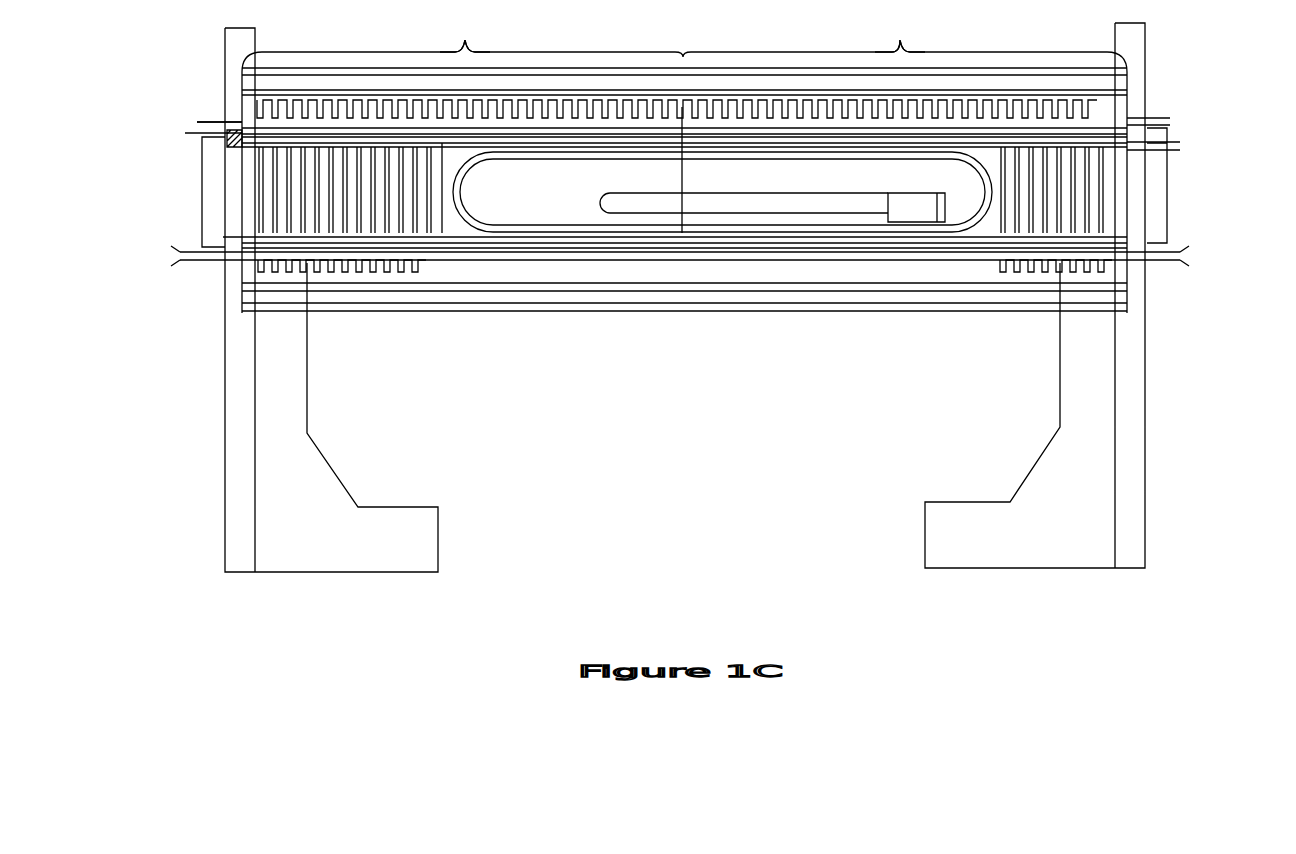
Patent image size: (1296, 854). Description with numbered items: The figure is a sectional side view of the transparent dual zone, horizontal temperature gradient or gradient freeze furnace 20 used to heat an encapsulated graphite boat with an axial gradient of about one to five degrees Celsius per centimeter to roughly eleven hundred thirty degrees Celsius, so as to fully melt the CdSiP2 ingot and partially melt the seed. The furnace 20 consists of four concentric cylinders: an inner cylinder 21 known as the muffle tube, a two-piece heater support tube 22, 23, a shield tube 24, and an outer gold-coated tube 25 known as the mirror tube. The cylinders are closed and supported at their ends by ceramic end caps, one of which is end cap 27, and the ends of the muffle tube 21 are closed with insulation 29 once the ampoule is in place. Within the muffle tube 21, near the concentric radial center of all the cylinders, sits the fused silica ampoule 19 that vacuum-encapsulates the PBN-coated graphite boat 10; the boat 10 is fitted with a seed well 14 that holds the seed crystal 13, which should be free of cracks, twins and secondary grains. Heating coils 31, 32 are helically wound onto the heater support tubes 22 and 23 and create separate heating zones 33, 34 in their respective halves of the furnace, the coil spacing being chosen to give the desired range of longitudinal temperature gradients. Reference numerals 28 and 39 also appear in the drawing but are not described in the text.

The PBN-coated graphite boat 10 is at (596, 201).
The seed crystal 13 is at (912, 189).
The seed well 14 is at (904, 215).
The fused silica ampoule 19 is at (455, 236).
The furnace 20 is at (773, 319).
The inner cylinder (muffle tube) 21 is at (224, 147).
The heater support tube 22 is at (195, 132).
The heater support tube 23 is at (768, 128).
The shield tube 24 is at (1135, 91).
The outer gold-coated tube (mirror tube) 25 is at (1135, 72).
The ceramic end cap 27 is at (1148, 413).
The left pillar 28 is at (222, 405).
The insulation 29 is at (1151, 190).
The heating coil 31 is at (198, 121).
The heating coil 32 is at (1172, 121).
The heating zone 33 is at (465, 35).
The heating zone 34 is at (900, 35).
The right rod 39 is at (1182, 147).